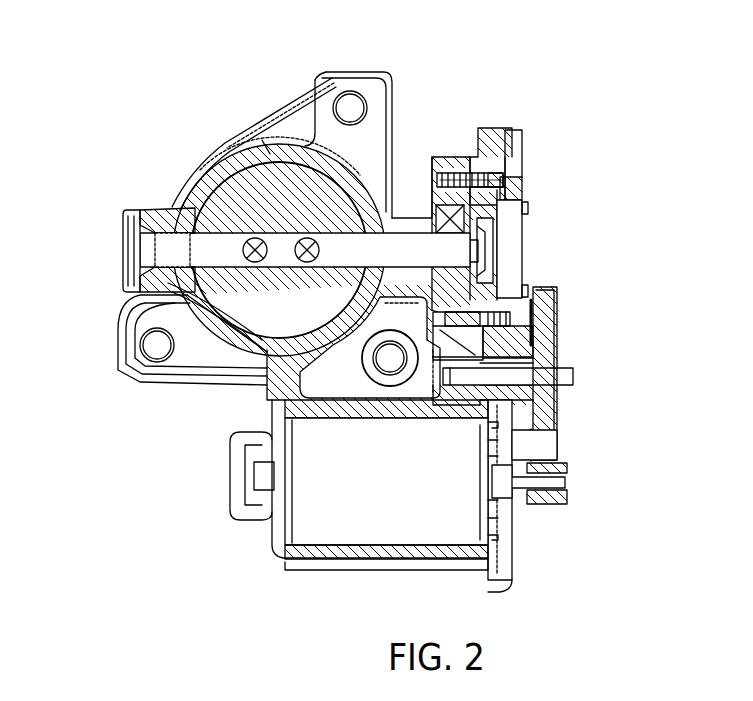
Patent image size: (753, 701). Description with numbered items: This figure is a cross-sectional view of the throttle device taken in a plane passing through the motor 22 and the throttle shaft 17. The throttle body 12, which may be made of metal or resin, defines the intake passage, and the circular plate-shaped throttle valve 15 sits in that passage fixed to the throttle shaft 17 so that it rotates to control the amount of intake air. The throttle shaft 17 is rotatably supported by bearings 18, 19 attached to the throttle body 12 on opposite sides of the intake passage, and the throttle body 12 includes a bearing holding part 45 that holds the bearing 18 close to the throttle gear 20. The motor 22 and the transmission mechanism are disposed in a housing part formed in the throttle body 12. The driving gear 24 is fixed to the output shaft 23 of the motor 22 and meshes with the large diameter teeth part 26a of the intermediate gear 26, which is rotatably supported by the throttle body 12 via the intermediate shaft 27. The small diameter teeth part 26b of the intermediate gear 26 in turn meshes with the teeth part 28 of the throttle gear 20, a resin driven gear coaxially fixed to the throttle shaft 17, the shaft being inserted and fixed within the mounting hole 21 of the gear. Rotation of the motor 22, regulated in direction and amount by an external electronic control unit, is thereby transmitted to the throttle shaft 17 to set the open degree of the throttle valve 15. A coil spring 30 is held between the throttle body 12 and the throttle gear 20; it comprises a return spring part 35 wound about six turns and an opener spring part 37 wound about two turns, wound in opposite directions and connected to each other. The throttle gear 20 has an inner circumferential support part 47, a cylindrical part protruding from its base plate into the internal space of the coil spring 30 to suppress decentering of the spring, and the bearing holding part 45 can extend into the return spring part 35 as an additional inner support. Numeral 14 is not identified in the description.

The throttle body 12 is at (296, 92).
The throttle position sensor 14 is at (542, 252).
The throttle valve 15 is at (262, 190).
The throttle shaft 17 is at (167, 250).
The bearing 18 is at (430, 216).
The bearing 19 is at (168, 222).
The throttle gear 20 is at (526, 180).
The mounting hole 21 is at (495, 244).
The motor 22 is at (340, 508).
The output shaft 23 is at (548, 481).
The driving gear 24 is at (556, 500).
The intermediate gear 26 is at (560, 406).
The large diameter teeth part 26a is at (548, 452).
The small diameter teeth part 26b is at (556, 345).
The intermediate shaft 27 is at (572, 378).
The teeth part 28 is at (521, 328).
The coil spring 30 is at (458, 173).
The return spring part 35 is at (482, 173).
The opener spring part 37 is at (499, 175).
The bearing holding part 45 is at (443, 198).
The inner circumferential support part 47 is at (523, 193).